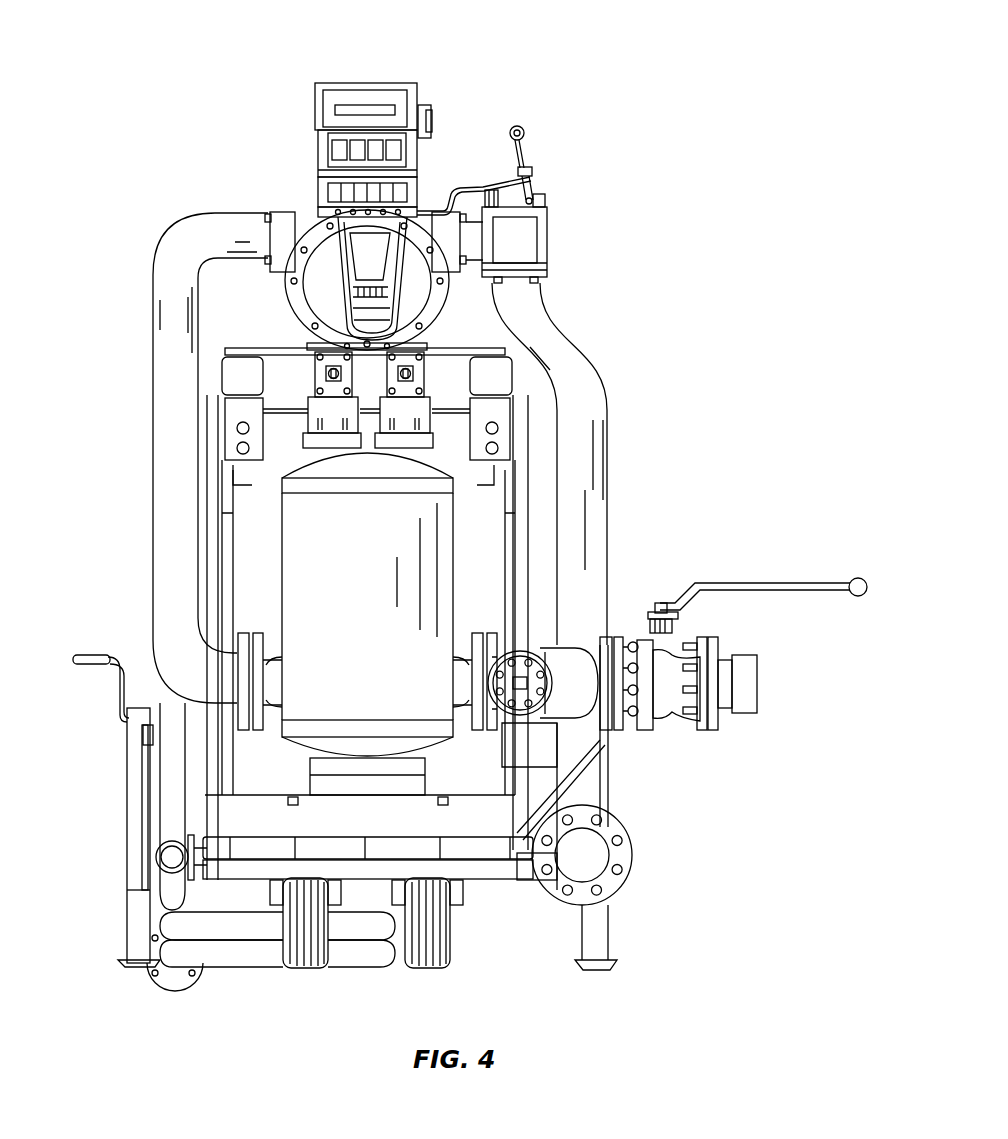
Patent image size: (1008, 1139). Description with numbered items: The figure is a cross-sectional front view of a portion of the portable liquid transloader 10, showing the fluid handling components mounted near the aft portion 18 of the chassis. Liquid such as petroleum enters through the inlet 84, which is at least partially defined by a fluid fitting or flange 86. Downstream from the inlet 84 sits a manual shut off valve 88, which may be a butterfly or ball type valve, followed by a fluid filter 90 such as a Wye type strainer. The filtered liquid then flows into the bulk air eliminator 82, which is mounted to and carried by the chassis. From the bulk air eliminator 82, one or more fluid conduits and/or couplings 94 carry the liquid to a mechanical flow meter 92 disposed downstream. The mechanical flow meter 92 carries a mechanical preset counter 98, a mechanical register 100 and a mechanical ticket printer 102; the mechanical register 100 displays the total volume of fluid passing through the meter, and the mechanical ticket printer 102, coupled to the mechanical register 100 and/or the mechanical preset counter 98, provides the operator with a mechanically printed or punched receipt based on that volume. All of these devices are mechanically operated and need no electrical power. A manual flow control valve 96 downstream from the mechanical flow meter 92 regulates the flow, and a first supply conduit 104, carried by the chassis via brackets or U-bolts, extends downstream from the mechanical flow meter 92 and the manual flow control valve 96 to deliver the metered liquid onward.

The transloader 10 is at (784, 104).
The aft portion 18 is at (100, 847).
The bulk air eliminator 82 is at (370, 570).
The inlet 84 is at (770, 686).
The flange 86 is at (726, 650).
The manual shut off valve 88 is at (673, 598).
The fluid filter 90 is at (572, 668).
The mechanical flow meter 92 is at (330, 250).
The fluid conduits and/or couplings 94 is at (160, 402).
The manual flow control valve 96 is at (530, 158).
The mechanical preset counter 98 is at (420, 195).
The mechanical register 100 is at (418, 148).
The mechanical ticket printer 102 is at (418, 90).
The first supply conduit 104 is at (571, 356).